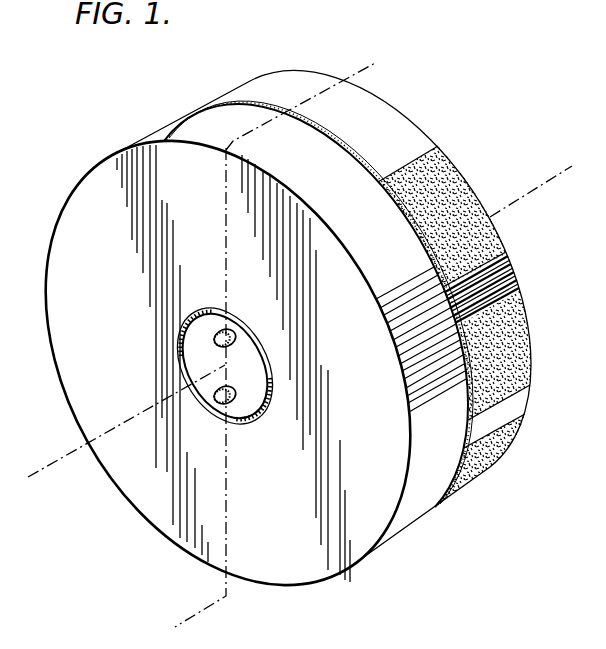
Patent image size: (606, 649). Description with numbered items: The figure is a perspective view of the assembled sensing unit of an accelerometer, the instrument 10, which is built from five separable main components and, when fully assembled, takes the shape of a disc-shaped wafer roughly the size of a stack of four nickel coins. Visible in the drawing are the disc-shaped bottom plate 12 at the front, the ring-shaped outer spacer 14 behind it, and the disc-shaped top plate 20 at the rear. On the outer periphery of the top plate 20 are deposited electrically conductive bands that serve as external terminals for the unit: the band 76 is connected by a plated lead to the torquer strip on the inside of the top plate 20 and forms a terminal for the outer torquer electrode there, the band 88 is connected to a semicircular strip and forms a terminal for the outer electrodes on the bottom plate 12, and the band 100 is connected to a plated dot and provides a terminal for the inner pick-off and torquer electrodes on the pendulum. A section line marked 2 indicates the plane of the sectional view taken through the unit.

The instrument 10 is at (58, 186).
The bottom plate 12 is at (378, 481).
The outer spacer 14 is at (330, 146).
The top plate 20 is at (415, 140).
The external band 76 is at (462, 200).
The band 100 is at (510, 355).
The outer band 88 is at (483, 472).
The section line 2- 2 is at (186, 596).